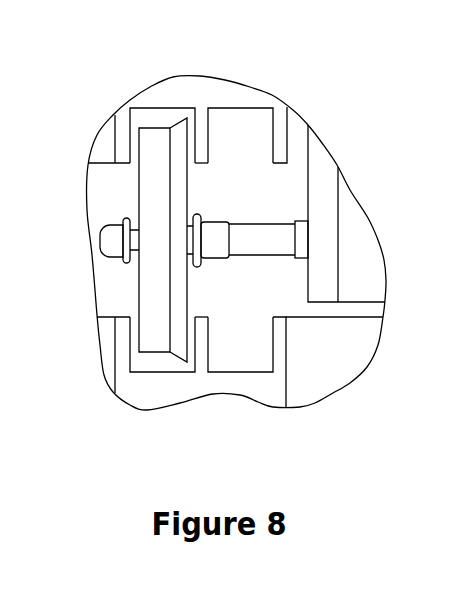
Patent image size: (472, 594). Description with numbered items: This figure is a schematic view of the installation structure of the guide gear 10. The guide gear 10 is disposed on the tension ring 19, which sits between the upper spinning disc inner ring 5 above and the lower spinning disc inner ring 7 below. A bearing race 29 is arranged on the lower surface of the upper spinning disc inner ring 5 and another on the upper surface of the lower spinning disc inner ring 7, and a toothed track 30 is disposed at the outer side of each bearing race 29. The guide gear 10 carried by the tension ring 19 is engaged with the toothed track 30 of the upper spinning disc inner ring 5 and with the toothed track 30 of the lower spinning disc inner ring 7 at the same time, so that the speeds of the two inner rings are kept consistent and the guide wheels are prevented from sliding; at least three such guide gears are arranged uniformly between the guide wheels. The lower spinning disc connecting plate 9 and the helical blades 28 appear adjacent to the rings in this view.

The upper spinning disc inner ring 5 is at (198, 90).
The lower spinning disc inner ring 7 is at (240, 388).
The lower spinning disc connecting plate 9 is at (322, 358).
The guide gear 10 is at (157, 317).
The tension ring 19 is at (320, 188).
The helical blades 28 is at (105, 148).
The bearing race 29 is at (247, 137).
The toothed track 30 is at (150, 118).